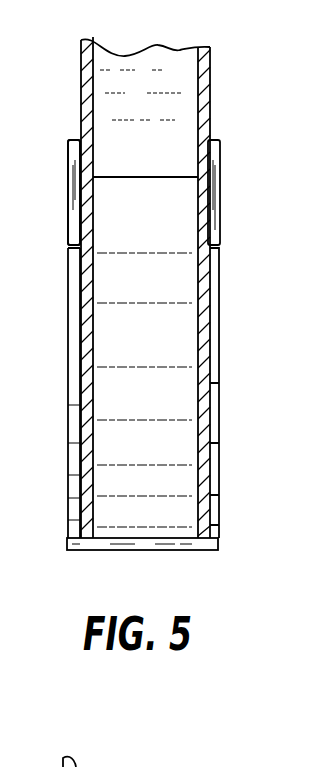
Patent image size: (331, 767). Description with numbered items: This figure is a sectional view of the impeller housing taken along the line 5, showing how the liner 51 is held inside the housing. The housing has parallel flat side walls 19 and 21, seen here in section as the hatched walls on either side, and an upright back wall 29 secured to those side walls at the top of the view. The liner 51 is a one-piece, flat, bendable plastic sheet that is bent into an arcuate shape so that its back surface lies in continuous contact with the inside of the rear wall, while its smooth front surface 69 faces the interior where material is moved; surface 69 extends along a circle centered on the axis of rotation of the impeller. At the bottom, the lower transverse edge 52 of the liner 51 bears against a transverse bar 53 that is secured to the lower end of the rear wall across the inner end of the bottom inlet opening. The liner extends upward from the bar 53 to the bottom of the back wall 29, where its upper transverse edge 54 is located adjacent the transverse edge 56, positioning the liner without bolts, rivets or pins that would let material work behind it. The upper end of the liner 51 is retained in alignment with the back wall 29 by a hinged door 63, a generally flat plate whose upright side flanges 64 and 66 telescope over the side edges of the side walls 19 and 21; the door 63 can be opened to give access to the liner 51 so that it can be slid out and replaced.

The section line 5 is at (0, 492).
The side wall 19 is at (202, 336).
The side wall 21 is at (86, 323).
The back wall 29 is at (158, 68).
The liner 51 is at (160, 283).
The lower transverse edge 52 is at (155, 537).
The transverse bar 53 is at (137, 542).
The upper transverse edge 54 is at (155, 178).
The transverse edge 56 is at (143, 177).
The door 63 is at (68, 208).
The side flange 64 is at (214, 164).
The side flange 66 is at (76, 163).
The front surface 69 is at (136, 327).